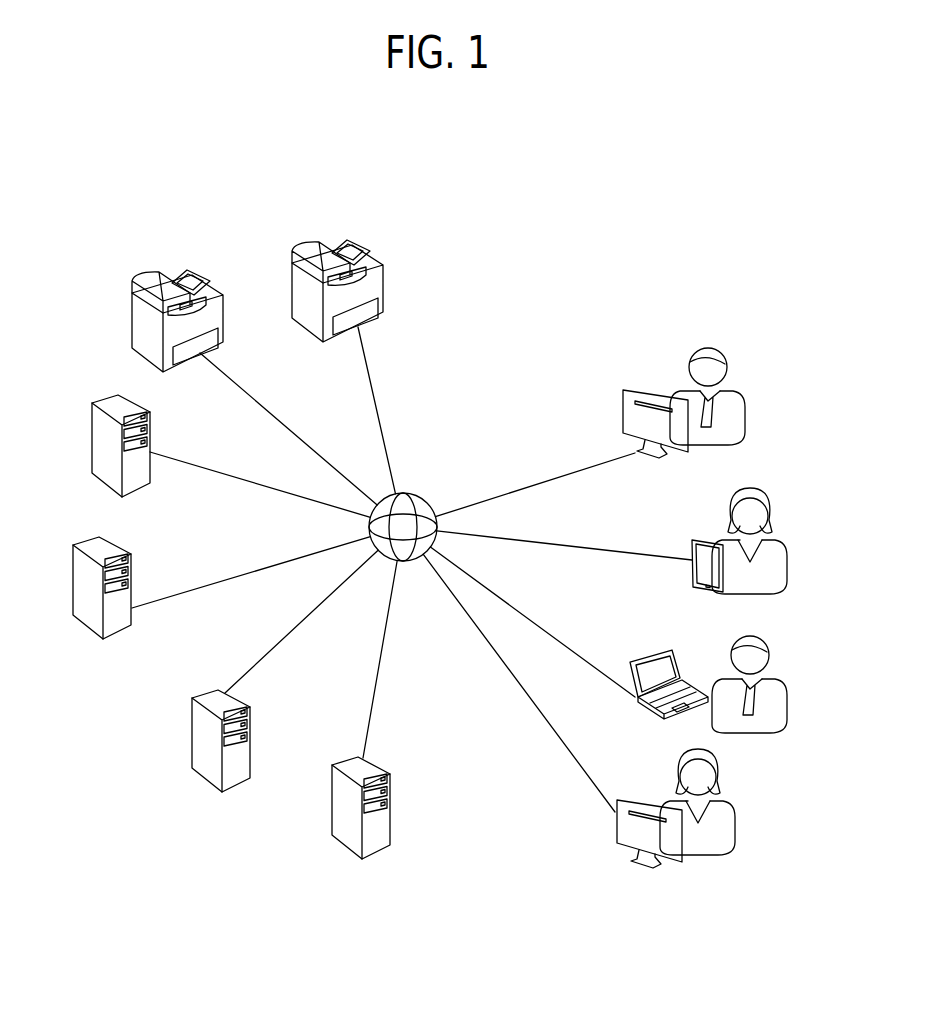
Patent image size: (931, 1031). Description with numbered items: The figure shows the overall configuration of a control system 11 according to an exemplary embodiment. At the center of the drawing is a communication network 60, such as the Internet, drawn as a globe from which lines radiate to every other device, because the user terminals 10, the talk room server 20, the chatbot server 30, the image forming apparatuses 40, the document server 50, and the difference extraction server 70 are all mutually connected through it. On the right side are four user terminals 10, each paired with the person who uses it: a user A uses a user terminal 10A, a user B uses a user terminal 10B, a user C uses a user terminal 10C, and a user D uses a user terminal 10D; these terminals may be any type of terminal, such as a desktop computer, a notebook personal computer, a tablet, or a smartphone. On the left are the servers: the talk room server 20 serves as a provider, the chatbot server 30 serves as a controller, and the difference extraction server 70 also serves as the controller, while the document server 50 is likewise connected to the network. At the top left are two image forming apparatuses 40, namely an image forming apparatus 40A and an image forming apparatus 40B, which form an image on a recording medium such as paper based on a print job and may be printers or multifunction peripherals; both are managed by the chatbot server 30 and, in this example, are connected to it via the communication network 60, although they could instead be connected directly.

The control system 11 is at (488, 208).
The user terminals 10 is at (613, 313).
The user terminal 10A is at (643, 392).
The user terminal 10B is at (697, 540).
The user terminal 10C is at (642, 653).
The user terminal 10D is at (635, 798).
The talk room server 20 is at (340, 760).
The chatbot server 30 is at (200, 697).
The image forming apparatuses 40 is at (247, 213).
The image forming apparatus 40A is at (312, 242).
The image forming apparatus 40B is at (178, 272).
The document server 50 is at (83, 540).
The communication network 60 is at (422, 493).
The difference extraction server 70 is at (98, 397).
The user A is at (740, 402).
The user B is at (787, 550).
The user C is at (778, 690).
The user D is at (730, 812).